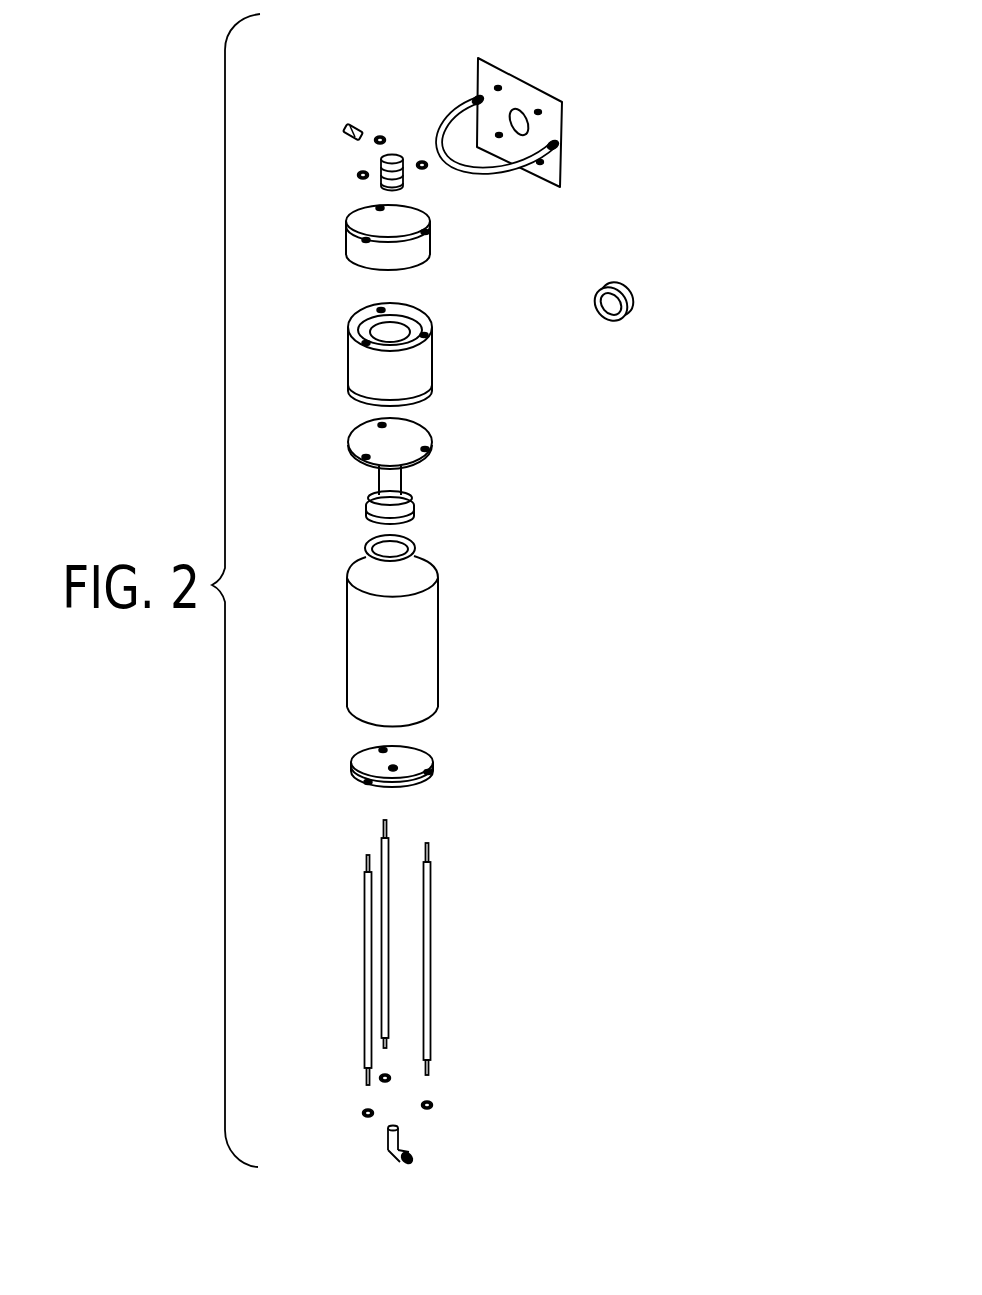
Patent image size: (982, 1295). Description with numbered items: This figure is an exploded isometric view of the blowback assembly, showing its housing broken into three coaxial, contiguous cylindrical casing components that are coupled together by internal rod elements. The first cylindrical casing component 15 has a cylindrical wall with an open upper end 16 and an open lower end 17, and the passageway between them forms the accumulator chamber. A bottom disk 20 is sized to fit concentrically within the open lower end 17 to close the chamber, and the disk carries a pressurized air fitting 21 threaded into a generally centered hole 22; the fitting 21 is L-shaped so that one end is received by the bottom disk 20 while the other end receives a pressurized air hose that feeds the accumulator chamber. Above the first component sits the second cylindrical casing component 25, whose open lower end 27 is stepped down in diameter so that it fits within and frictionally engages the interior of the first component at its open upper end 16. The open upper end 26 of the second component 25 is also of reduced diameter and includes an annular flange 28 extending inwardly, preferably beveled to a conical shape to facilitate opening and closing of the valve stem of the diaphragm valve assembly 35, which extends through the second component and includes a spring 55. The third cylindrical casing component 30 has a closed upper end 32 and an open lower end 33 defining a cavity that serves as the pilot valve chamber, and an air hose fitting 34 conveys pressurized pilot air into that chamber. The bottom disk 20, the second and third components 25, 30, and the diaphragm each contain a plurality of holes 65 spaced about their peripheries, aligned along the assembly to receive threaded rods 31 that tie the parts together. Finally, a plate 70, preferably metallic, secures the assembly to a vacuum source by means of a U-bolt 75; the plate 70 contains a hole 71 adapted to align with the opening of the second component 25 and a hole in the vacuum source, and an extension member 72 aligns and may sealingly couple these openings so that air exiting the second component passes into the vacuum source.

The first cylindrical casing component 15 is at (431, 630).
The open upper end 16 is at (423, 575).
The open lower end 17 is at (430, 723).
The bottom disk 20 is at (383, 741).
The pressurized air fitting 21 is at (403, 1146).
The hole 22 is at (397, 768).
The second cylindrical casing component 25 is at (405, 343).
The open upper end 26 is at (398, 332).
The open lower end 27 is at (422, 403).
The annular flange 28 is at (373, 337).
The third cylindrical casing component 30 is at (381, 246).
The rods 31 is at (380, 855).
The closed upper end 32 is at (373, 228).
The open lower end 33 is at (412, 267).
The air hose fitting 34 is at (358, 123).
The diaphragm valve assembly 35 is at (438, 488).
The spring 55 is at (383, 157).
The holes 65 is at (377, 207).
The plate 70 is at (557, 117).
The hole 71 is at (520, 117).
The extension member 72 is at (627, 306).
The U-bolt 75 is at (450, 110).